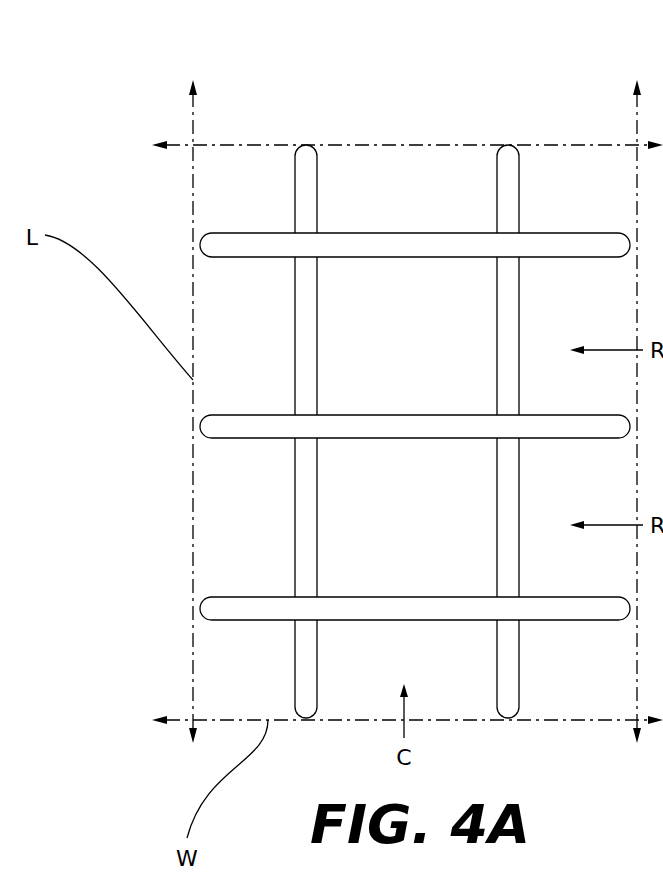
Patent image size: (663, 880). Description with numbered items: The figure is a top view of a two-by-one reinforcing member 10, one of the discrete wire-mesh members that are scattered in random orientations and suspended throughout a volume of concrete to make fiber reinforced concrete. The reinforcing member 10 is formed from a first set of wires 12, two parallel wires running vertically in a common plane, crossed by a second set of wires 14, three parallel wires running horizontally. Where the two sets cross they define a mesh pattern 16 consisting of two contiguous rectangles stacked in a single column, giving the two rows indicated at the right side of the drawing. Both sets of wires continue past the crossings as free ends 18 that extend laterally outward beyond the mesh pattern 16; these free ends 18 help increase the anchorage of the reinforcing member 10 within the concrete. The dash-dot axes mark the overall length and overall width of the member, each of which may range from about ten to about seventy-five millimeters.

The reinforcing member 10 is at (165, 127).
The first set of wires 12 is at (322, 165).
The second set of wires 14 is at (231, 271).
The mesh pattern 16 is at (445, 478).
The free ends 18 is at (193, 245).